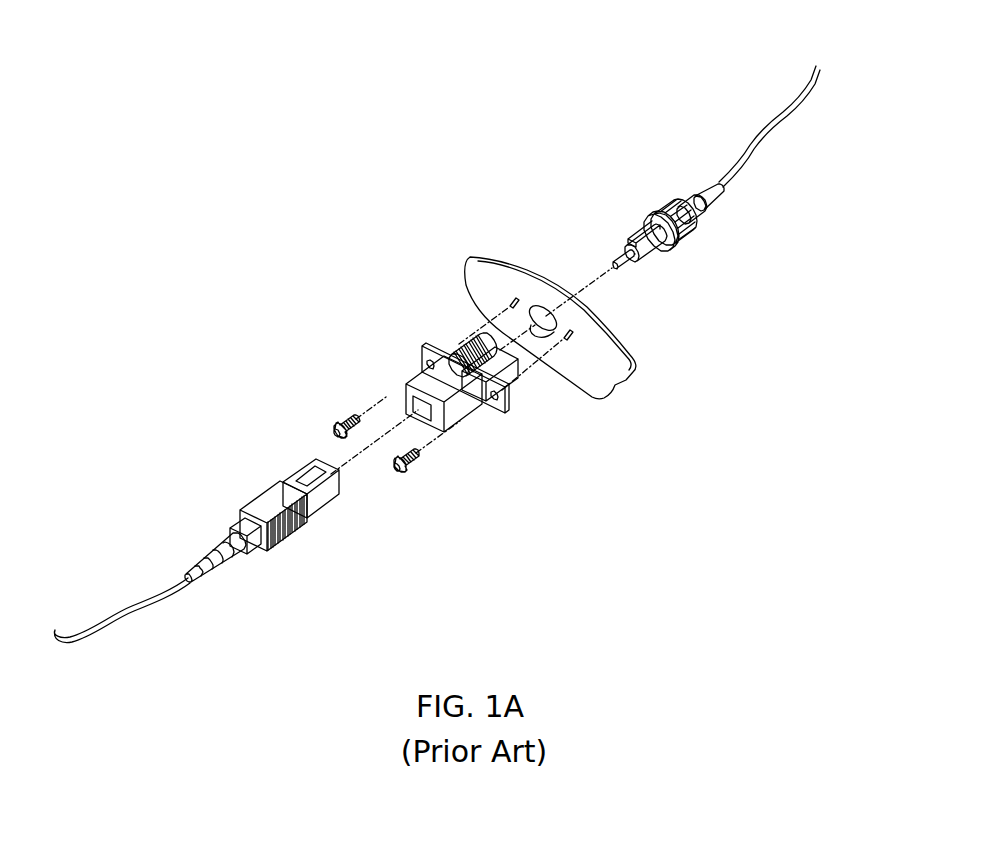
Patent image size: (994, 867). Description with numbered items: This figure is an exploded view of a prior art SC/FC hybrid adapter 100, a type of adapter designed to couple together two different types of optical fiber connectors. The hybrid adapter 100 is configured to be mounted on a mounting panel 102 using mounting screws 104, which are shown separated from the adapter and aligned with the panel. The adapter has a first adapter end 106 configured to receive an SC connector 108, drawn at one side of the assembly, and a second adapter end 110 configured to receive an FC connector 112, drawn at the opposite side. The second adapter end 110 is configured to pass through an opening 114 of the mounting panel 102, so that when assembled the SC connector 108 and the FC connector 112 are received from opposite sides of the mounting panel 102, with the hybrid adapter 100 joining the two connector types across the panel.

The SC/FC hybrid adapter 100 is at (485, 384).
The mounting panel 102 is at (503, 291).
The mounting screws 104 is at (388, 452).
The first adapter end 106 is at (433, 413).
The SC connector 108 is at (297, 474).
The second adapter end 110 is at (497, 363).
The FC connector 112 is at (637, 214).
The opening 114 is at (543, 320).